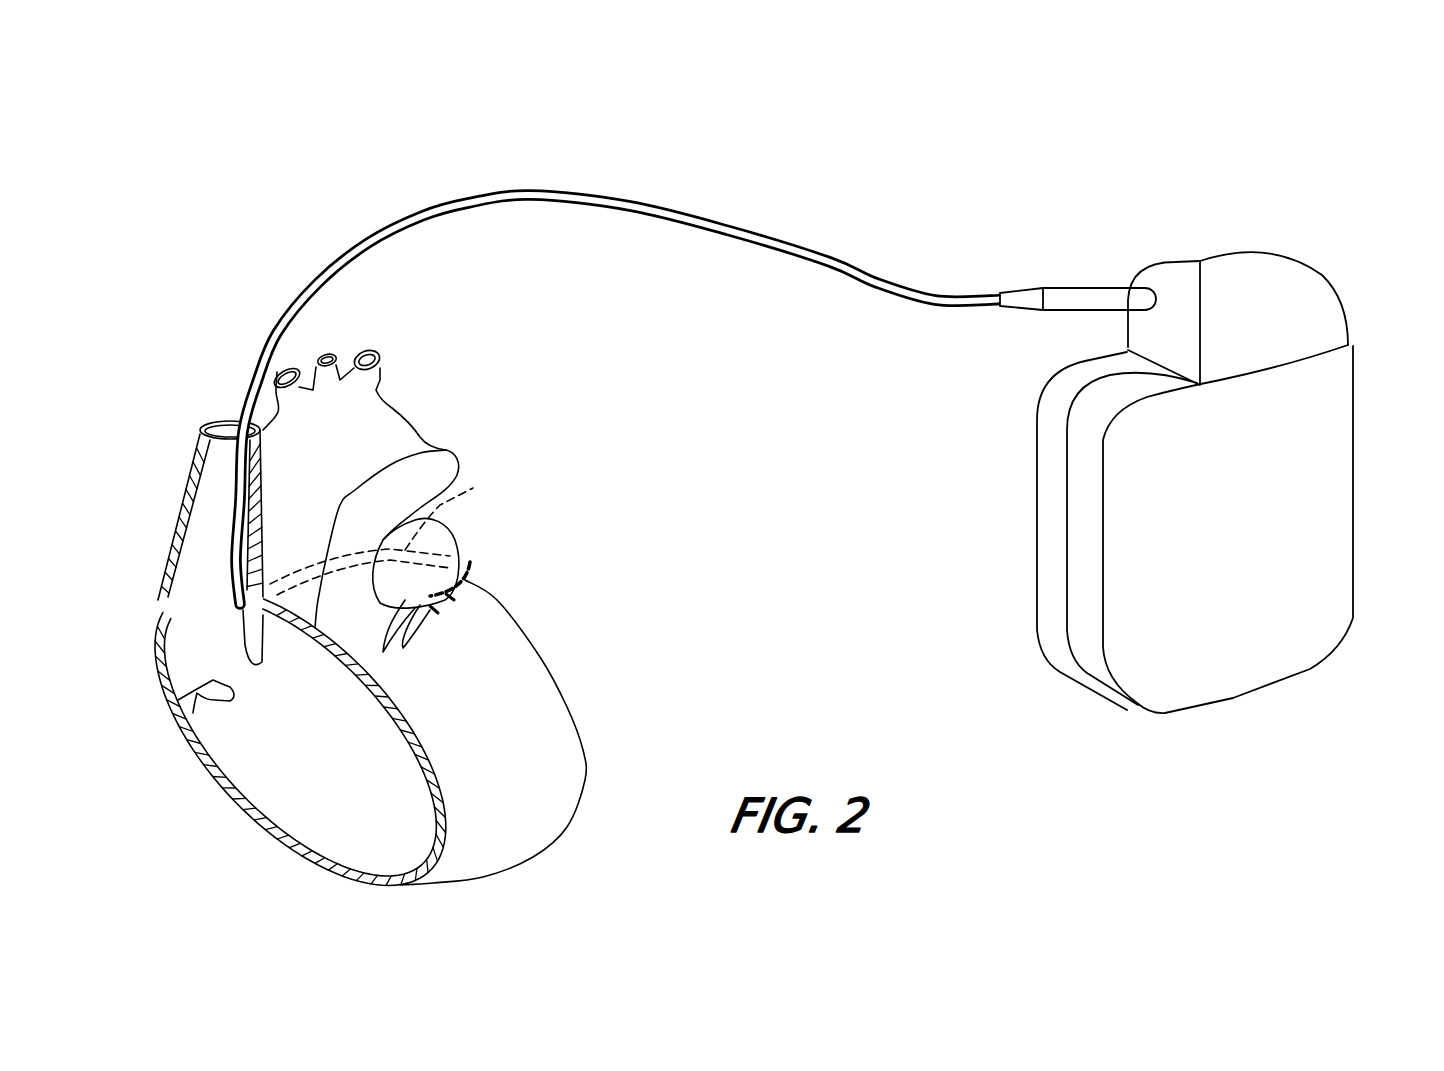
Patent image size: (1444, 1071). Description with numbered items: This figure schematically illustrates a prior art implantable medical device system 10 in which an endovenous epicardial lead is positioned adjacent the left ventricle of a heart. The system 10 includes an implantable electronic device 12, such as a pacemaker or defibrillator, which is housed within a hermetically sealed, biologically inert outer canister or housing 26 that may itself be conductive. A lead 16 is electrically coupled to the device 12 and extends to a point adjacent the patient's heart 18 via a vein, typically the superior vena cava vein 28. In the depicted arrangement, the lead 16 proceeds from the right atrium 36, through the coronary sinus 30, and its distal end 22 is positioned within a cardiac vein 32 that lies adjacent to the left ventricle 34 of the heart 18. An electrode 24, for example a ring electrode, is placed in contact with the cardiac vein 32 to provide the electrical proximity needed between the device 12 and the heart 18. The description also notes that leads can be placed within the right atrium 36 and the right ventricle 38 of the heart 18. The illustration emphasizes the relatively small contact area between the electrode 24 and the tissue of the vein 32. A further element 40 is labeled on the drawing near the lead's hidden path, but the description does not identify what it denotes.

The implantable medical device system 10 is at (947, 195).
The implantable electronic device 12 is at (1363, 526).
The lead 16 is at (877, 278).
The heart 18 is at (148, 530).
The distal end 22 is at (450, 598).
The electrode 24 is at (433, 610).
The housing 26 is at (1220, 667).
The superior vena cava vein 28 is at (200, 462).
The coronary sinus 30 is at (238, 604).
The cardiac vein 32 is at (440, 593).
The left ventricle 34 is at (528, 753).
The right atrium 36 is at (193, 645).
The right ventricle 38 is at (231, 749).
The coronary sinus 40 is at (440, 541).